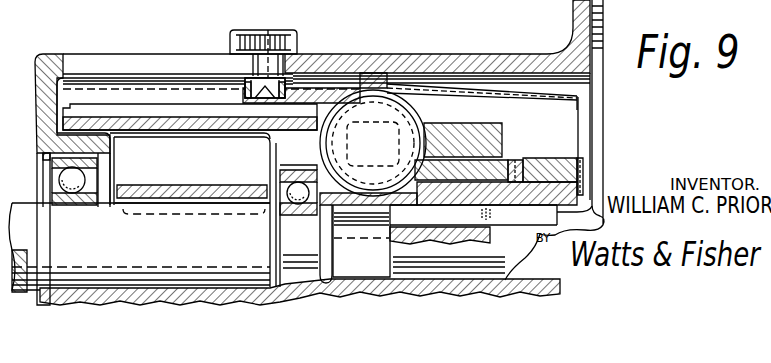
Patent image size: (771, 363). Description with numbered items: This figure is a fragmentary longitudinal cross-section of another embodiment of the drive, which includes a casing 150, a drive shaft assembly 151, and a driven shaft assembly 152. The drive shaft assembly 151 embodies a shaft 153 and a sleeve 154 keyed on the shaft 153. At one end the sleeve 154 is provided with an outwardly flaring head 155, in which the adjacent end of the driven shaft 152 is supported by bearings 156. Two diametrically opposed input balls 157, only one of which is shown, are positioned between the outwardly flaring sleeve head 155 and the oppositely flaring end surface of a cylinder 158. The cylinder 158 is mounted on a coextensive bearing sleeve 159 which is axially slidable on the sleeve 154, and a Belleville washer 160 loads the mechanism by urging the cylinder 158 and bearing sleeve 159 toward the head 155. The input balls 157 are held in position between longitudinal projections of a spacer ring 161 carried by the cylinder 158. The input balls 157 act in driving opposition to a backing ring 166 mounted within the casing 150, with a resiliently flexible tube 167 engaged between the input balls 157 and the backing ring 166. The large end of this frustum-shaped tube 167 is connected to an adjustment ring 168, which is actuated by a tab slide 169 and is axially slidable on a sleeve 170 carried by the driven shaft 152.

The casing 150 is at (428, 53).
The drive shaft assembly 151 is at (407, 282).
The driven shaft assembly 152 is at (157, 210).
The shaft 153 is at (499, 272).
The sleeve 154 is at (601, 184).
The outwardly flaring head 155 is at (278, 162).
The bearings 156 is at (284, 214).
The input balls 157 is at (373, 143).
The cylinder 158 is at (519, 166).
The bearing sleeve 159 is at (544, 178).
The Belleville washer 160 is at (584, 163).
The spacer ring 161 is at (462, 138).
The backing ring 166 is at (371, 72).
The resiliently flexible tube 167 is at (487, 92).
The adjustment ring 168 is at (245, 84).
The tab slide 169 is at (273, 28).
The sleeve 170 is at (120, 123).